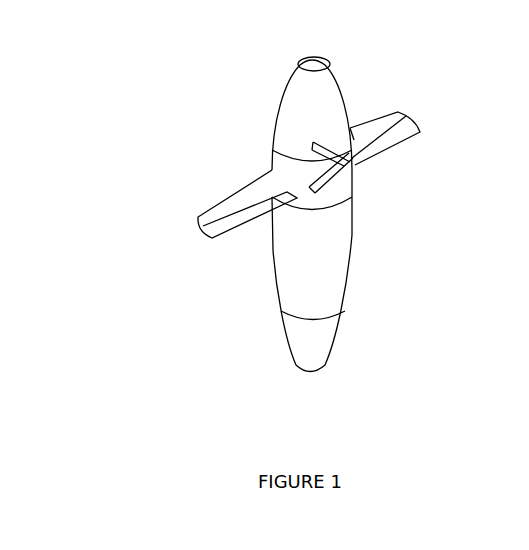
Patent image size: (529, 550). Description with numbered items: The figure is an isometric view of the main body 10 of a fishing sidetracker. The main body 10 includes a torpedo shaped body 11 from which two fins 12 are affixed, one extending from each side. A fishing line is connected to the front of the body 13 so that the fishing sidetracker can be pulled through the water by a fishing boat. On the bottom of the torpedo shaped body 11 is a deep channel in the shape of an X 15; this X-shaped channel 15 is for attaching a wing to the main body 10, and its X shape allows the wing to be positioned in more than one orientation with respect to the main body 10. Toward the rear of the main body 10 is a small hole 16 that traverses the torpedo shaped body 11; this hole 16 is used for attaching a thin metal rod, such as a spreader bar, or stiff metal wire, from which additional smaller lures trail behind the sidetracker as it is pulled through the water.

The main body 10 is at (84, 134).
The torpedo shaped body 11 is at (345, 82).
The fins 12 is at (185, 222).
The front of the body 13 is at (294, 62).
The X-shaped channel 15 is at (360, 170).
The hole 16 is at (280, 318).